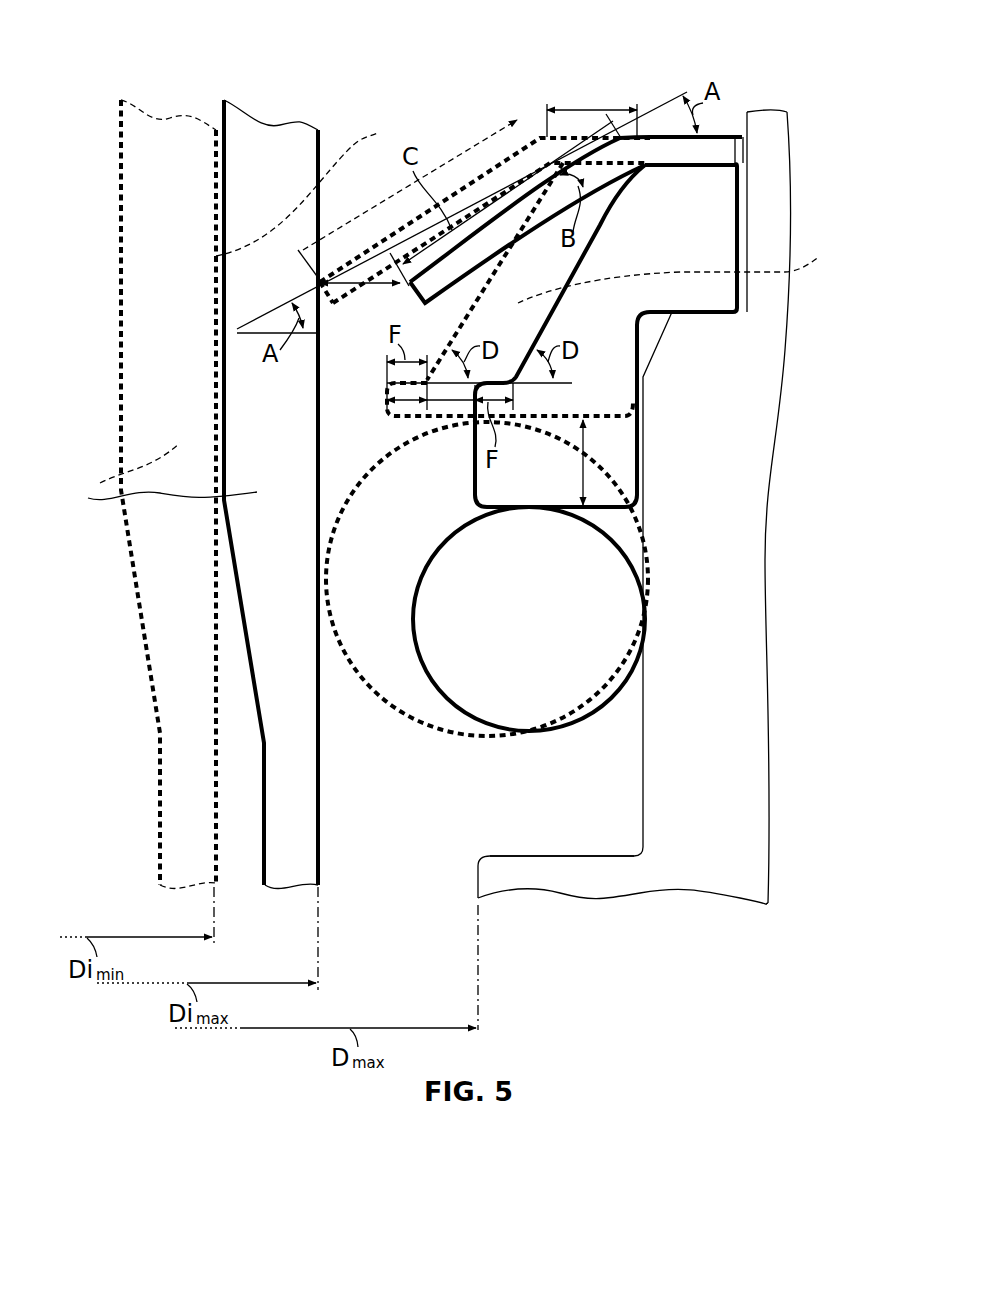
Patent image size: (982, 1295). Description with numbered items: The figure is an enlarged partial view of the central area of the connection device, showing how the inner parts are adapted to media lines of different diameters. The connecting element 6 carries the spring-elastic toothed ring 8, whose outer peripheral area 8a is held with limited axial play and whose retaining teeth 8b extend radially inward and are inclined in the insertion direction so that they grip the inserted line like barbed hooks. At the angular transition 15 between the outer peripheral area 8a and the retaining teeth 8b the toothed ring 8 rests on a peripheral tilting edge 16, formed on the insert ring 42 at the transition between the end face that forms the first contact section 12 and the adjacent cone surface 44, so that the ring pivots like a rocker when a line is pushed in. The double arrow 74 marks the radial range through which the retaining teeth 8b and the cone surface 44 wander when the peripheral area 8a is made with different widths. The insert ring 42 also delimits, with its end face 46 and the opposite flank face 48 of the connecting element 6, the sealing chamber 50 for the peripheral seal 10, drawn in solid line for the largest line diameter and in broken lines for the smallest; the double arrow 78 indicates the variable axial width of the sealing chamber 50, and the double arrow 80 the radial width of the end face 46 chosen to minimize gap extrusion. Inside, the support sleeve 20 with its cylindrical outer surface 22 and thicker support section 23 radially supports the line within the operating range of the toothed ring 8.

The connecting element 6 is at (757, 662).
The toothed ring 8 is at (649, 132).
The outer peripheral area 8a is at (734, 133).
The retaining teeth 8b is at (475, 253).
The peripheral seal 10 is at (625, 650).
The first contact section 12 is at (735, 153).
The angular transition 15 is at (545, 158).
The tilting edge 16 is at (641, 170).
The support sleeve 20 is at (262, 152).
The cylindrical outer surface 22 is at (322, 140).
The support section 23 is at (159, 488).
The insert ring 42 is at (600, 313).
The cone surface 44 is at (543, 318).
The end face 46 is at (410, 420).
The flank face 48 is at (511, 851).
The sealing chamber 50 is at (602, 799).
The double arrow 74 is at (601, 110).
The double arrow 78 is at (580, 462).
The double arrow 80 is at (386, 412).